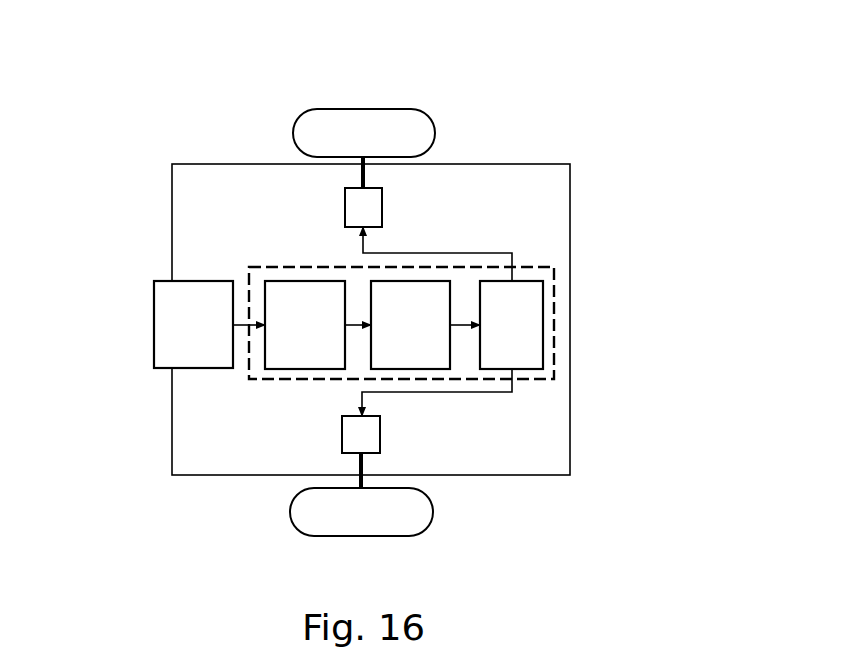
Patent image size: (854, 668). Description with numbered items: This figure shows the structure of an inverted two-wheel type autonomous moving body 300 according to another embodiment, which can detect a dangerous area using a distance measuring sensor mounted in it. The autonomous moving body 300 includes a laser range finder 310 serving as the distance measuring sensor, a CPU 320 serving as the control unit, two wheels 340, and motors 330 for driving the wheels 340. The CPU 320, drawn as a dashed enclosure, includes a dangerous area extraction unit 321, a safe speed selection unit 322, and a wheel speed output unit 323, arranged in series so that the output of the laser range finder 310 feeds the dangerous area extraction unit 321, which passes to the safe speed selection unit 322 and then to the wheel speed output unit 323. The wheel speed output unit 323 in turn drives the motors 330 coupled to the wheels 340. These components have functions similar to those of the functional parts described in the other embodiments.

The vehicle control system 300 is at (618, 77).
The laser range finder 310 is at (154, 322).
The CPU 320 is at (525, 267).
The dangerous area extraction unit 321 is at (283, 283).
The safe speed selection unit 322 is at (442, 370).
The wheel speed output unit 323 is at (543, 326).
The motor 330 is at (382, 207).
The wheel 340 is at (435, 131).